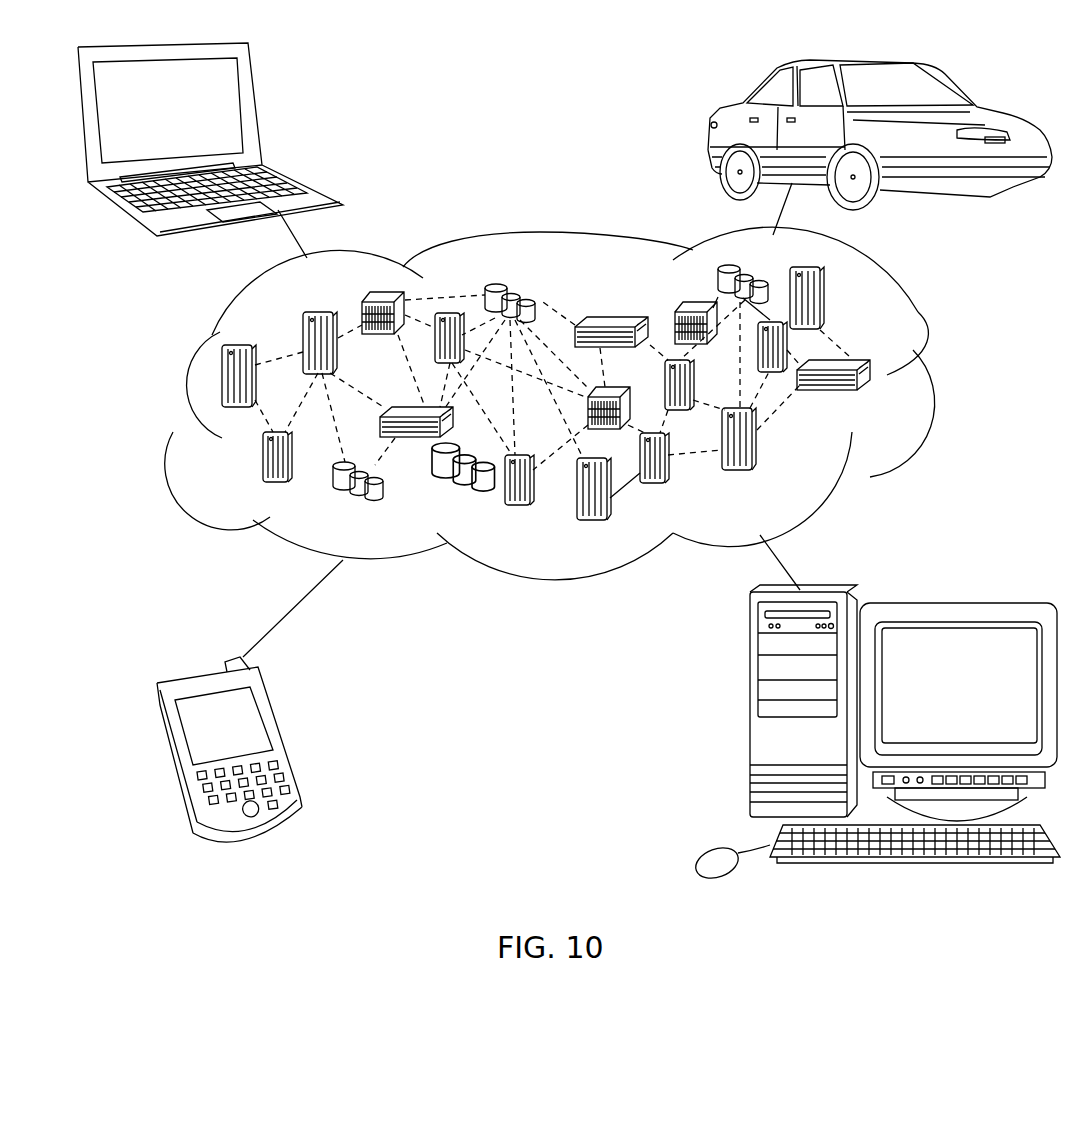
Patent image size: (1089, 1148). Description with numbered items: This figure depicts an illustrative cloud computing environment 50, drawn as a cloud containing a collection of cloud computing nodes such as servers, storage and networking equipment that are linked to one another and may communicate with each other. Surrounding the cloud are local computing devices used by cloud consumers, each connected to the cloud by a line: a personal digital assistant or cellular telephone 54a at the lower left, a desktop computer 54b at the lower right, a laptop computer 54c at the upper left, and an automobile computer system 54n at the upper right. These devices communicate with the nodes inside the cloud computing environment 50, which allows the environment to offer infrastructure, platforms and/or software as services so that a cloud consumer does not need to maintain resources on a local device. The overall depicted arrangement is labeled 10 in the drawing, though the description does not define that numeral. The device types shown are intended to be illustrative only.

The system environment 10 is at (887, 399).
The cloud computing environment 50 is at (918, 312).
The personal digital assistant (PDA) or cellular telephone 54a is at (282, 725).
The desktop computer 54b is at (750, 718).
The laptop computer 54c is at (257, 102).
The automobile computer system 54n is at (723, 113).